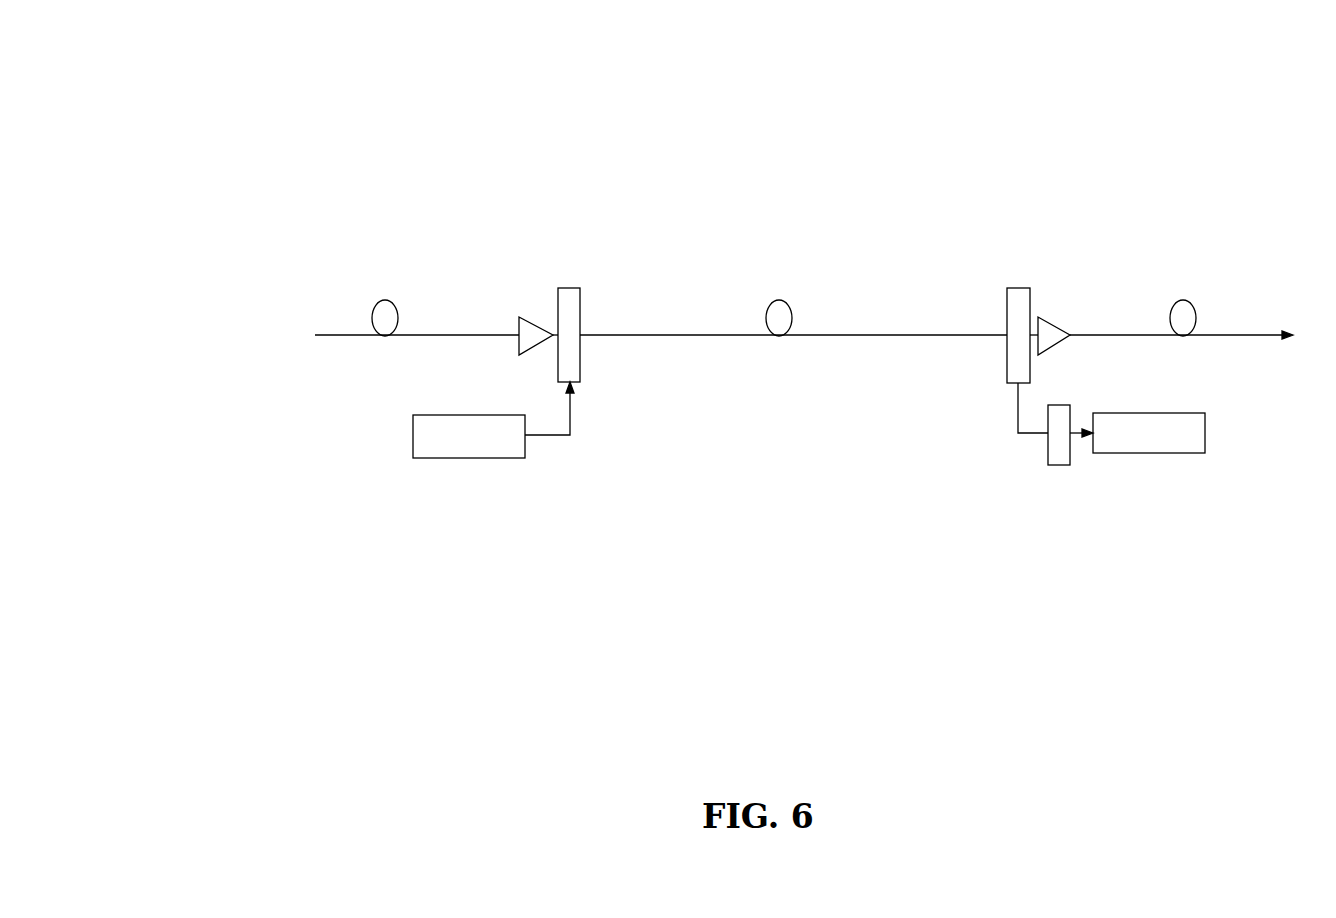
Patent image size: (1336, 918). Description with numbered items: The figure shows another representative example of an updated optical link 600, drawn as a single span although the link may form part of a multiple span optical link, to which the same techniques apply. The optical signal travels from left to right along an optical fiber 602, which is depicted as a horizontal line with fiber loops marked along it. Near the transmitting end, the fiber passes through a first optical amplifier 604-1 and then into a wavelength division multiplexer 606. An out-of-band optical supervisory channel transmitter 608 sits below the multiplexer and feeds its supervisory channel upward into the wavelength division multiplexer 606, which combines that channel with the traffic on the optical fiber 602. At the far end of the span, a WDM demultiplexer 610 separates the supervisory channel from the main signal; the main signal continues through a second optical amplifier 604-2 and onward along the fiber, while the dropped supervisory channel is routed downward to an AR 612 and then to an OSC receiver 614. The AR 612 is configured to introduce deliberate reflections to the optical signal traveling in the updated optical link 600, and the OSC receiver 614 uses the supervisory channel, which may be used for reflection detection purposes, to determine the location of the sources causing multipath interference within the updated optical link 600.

The updated optical link 600 is at (219, 67).
The optical fiber 602 is at (298, 333).
The optical amplifier 604-1 is at (508, 328).
The optical amplifier 604-2 is at (1064, 309).
The wavelength division multiplexer 606 is at (547, 292).
The out-of-band optical supervisory channel transmitter 608 is at (399, 437).
The WDM demultiplexer 610 is at (992, 320).
The AR 612 is at (1037, 452).
The OSC receiver 614 is at (1217, 437).